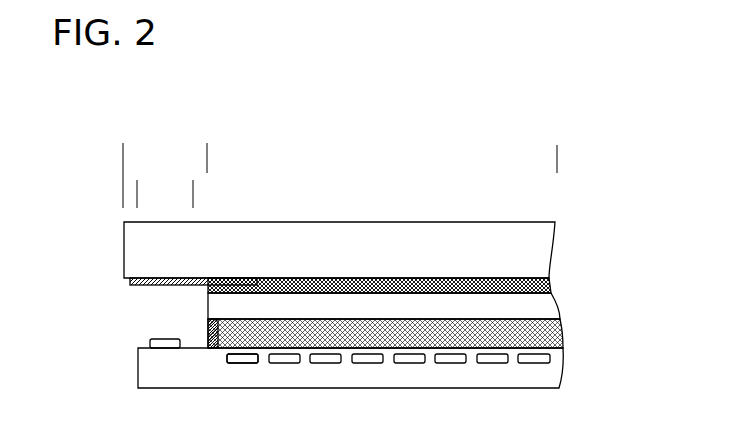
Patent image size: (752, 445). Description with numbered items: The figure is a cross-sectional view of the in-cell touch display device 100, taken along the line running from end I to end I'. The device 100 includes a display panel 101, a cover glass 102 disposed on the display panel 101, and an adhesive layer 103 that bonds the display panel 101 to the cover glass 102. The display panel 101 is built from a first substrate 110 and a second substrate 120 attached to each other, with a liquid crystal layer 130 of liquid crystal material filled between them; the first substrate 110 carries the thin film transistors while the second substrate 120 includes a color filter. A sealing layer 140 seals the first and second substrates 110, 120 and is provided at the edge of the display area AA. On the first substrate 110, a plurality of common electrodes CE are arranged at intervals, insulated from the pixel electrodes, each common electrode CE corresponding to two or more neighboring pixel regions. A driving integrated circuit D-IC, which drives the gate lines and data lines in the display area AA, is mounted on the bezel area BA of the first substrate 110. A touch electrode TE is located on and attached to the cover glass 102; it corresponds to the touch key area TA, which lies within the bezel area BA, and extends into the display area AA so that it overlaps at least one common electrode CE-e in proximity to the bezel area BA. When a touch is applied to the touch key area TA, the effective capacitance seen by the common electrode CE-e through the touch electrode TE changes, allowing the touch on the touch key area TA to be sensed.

The in-cell touch display device 100 is at (113, 129).
The display panel 101 is at (421, 340).
The cover glass 102 is at (549, 248).
The adhesive layer 103 is at (551, 283).
The first substrate 110 is at (561, 370).
The second substrate 120 is at (556, 305).
The liquid crystal layer 130 is at (562, 333).
The sealing layer 140 is at (205, 335).
The touch electrode TE is at (130, 283).
The driving integrated circuit D-IC is at (148, 340).
The common electrode CE is at (363, 363).
The common electrode in proximity to the bezel area CE-e is at (238, 363).
The bezel area BA is at (199, 159).
The display area AA is at (549, 159).
The touch key area TA is at (185, 195).
The section line start I is at (138, 428).
The section line end I' is at (554, 428).